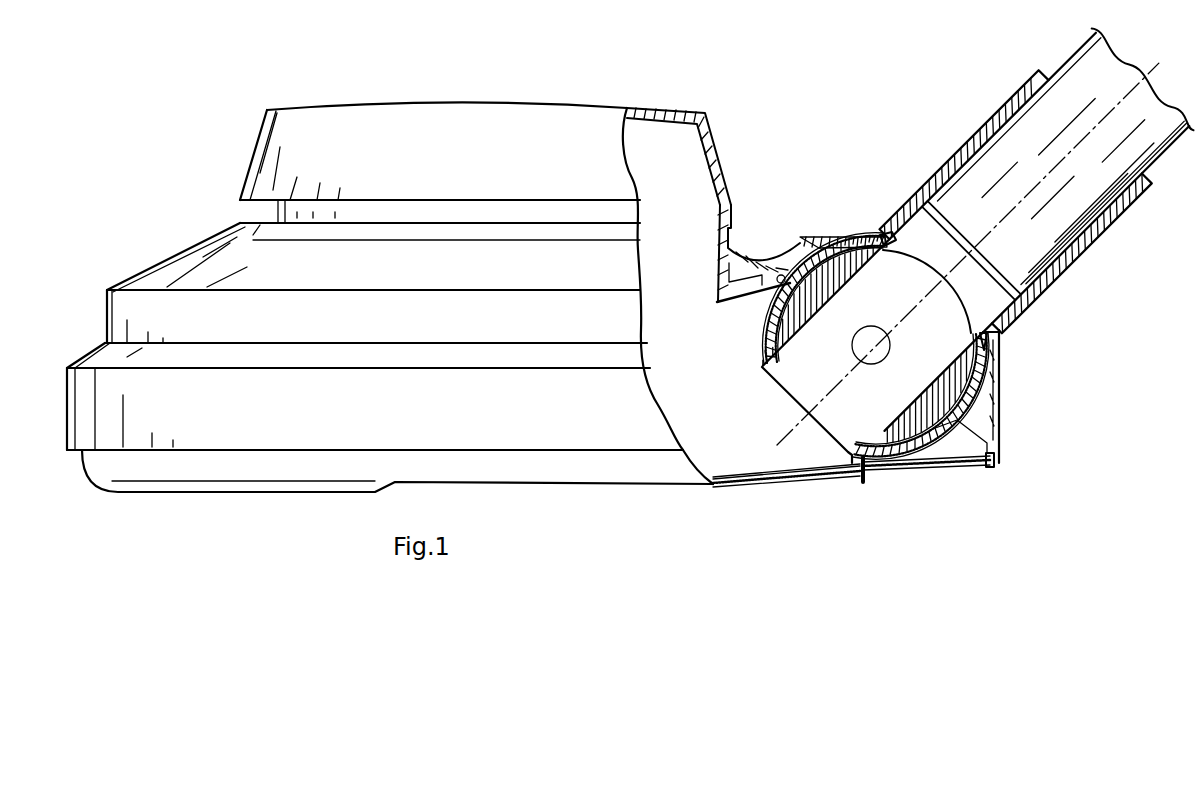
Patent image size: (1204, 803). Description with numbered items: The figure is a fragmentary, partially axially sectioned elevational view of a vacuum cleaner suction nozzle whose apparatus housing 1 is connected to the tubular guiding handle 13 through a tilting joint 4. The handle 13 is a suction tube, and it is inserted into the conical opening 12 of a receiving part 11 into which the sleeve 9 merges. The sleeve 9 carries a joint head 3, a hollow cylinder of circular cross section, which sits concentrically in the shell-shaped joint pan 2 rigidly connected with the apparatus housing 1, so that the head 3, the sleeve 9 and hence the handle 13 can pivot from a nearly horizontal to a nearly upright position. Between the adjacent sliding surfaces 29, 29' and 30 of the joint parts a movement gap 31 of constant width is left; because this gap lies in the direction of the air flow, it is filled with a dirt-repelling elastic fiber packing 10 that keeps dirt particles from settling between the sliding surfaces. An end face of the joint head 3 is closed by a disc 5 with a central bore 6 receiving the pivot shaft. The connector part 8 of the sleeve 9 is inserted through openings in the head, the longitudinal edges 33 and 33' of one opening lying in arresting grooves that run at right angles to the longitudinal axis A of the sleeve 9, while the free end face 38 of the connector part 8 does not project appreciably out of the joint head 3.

The apparatus housing 1 is at (680, 114).
The joint pan 2 is at (793, 247).
The joint head 3 is at (972, 422).
The tilting joint 4 is at (863, 484).
The disc 5 is at (837, 270).
The central bore 6 is at (875, 362).
The connector part 8 is at (833, 422).
The sleeve 9 is at (1022, 322).
The fiber packing 10 is at (980, 387).
The receiving part 11 is at (1073, 270).
The conical opening 12 is at (923, 247).
The guiding handle 13 is at (1160, 153).
The sliding surface 29 is at (767, 233).
The sliding surface 29' is at (1016, 491).
The sliding surface 30 is at (922, 472).
The movement gap 31 is at (817, 250).
The longitudinal edge 33 is at (888, 201).
The longitudinal edge 33' is at (1026, 357).
The free end face 38 is at (807, 433).
The longitudinal axis A is at (1035, 185).